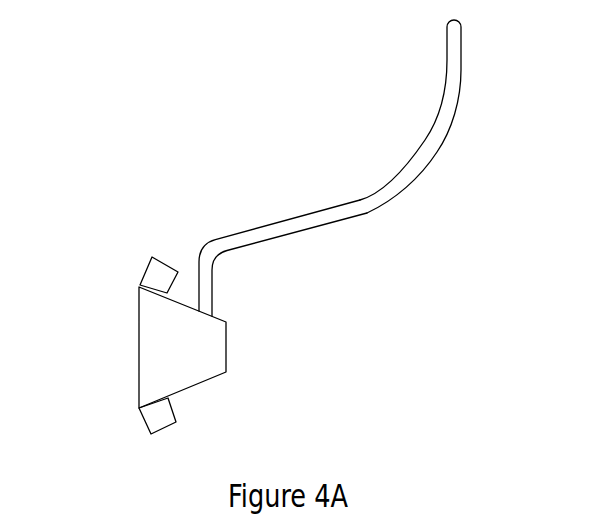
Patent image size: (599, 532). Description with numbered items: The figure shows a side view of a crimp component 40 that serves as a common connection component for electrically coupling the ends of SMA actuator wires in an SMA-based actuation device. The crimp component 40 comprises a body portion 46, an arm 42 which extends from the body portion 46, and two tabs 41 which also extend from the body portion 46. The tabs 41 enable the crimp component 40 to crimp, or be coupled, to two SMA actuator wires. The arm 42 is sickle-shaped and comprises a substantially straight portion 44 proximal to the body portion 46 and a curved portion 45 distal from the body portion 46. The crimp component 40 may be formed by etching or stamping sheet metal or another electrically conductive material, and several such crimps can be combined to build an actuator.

The crimp component 40 is at (284, 230).
The tabs 41 is at (163, 268).
The arm 42 is at (365, 168).
The substantially straight portion 44 is at (212, 283).
The curved portion 45 is at (447, 138).
The body portion 46 is at (203, 352).